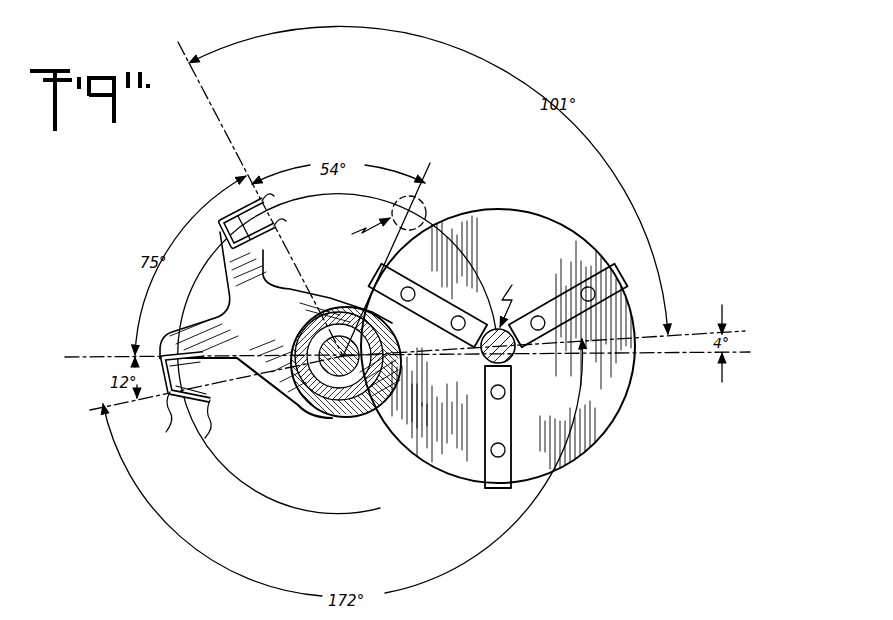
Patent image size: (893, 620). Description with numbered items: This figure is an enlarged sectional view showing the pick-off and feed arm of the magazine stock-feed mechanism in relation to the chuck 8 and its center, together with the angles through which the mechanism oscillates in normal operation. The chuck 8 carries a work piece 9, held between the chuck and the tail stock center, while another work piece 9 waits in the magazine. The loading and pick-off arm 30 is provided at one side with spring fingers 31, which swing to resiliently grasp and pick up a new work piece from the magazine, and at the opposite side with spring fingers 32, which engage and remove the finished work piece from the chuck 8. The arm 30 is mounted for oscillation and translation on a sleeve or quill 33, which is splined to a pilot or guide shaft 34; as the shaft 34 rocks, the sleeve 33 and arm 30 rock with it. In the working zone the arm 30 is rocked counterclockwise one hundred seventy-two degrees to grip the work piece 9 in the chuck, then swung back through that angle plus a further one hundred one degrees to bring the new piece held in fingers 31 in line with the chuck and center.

The chuck 8 is at (576, 260).
The work piece 9 is at (428, 212).
The loading and pick-off arm 30 is at (280, 385).
The spring fingers 31 is at (283, 206).
The spring fingers 32 is at (207, 403).
The sleeve or quill 33 is at (318, 392).
The pilot or guide shaft 34 is at (333, 385).